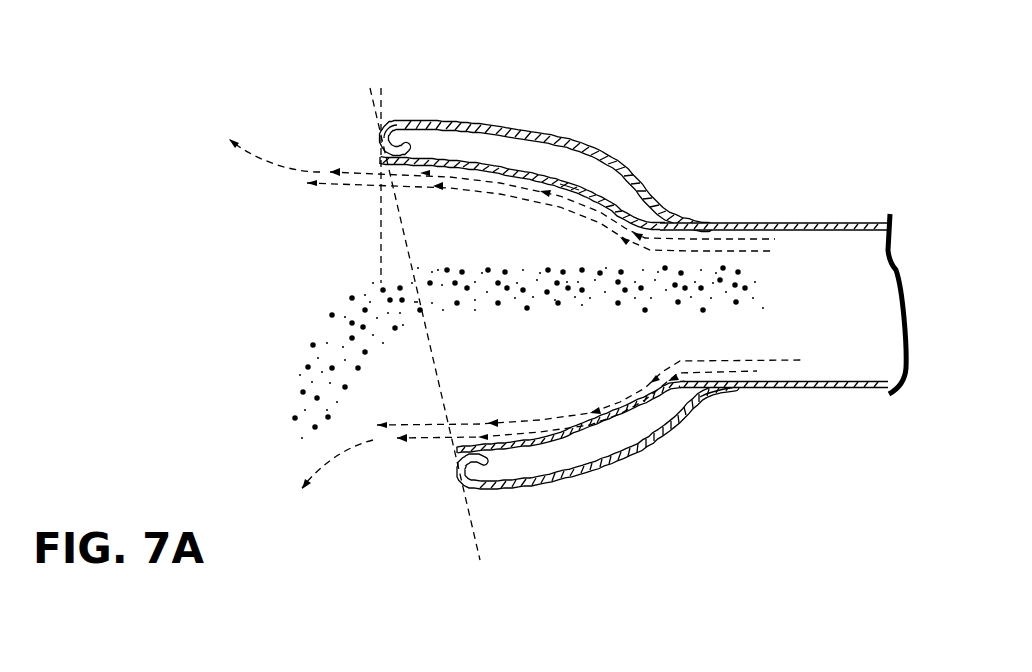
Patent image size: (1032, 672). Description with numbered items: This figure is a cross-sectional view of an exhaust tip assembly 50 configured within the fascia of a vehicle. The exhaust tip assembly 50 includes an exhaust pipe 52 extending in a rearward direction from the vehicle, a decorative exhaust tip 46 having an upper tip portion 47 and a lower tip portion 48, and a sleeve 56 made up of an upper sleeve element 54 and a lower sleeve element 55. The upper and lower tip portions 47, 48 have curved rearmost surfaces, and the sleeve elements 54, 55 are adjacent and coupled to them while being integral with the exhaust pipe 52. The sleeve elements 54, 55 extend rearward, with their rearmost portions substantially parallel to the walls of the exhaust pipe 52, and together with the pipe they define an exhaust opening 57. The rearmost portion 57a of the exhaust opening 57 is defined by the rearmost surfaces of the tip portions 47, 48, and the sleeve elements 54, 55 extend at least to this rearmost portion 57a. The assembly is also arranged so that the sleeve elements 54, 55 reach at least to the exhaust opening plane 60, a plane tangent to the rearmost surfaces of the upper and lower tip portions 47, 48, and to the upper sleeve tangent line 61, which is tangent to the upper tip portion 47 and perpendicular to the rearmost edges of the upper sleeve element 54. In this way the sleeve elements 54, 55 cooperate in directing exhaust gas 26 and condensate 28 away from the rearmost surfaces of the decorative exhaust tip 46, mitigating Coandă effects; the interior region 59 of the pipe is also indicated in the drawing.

The exhaust gas 26 is at (427, 438).
The condensate 28 is at (330, 330).
The decorative exhaust tip 46 is at (503, 121).
The upper tip portion 47 is at (553, 138).
The lower tip portion 48 is at (560, 480).
The exhaust tip assembly 50 is at (702, 437).
The exhaust pipe 52 is at (775, 223).
The upper sleeve element 54 is at (563, 180).
The lower sleeve element 55 is at (578, 437).
The sleeve 56 is at (451, 153).
The exhaust opening 57 is at (498, 353).
The rearmost portion of the exhaust opening 57a is at (408, 246).
The tube interior 59 is at (812, 339).
The exhaust opening plane 60 is at (468, 512).
The upper sleeve tangent line 61 is at (400, 113).